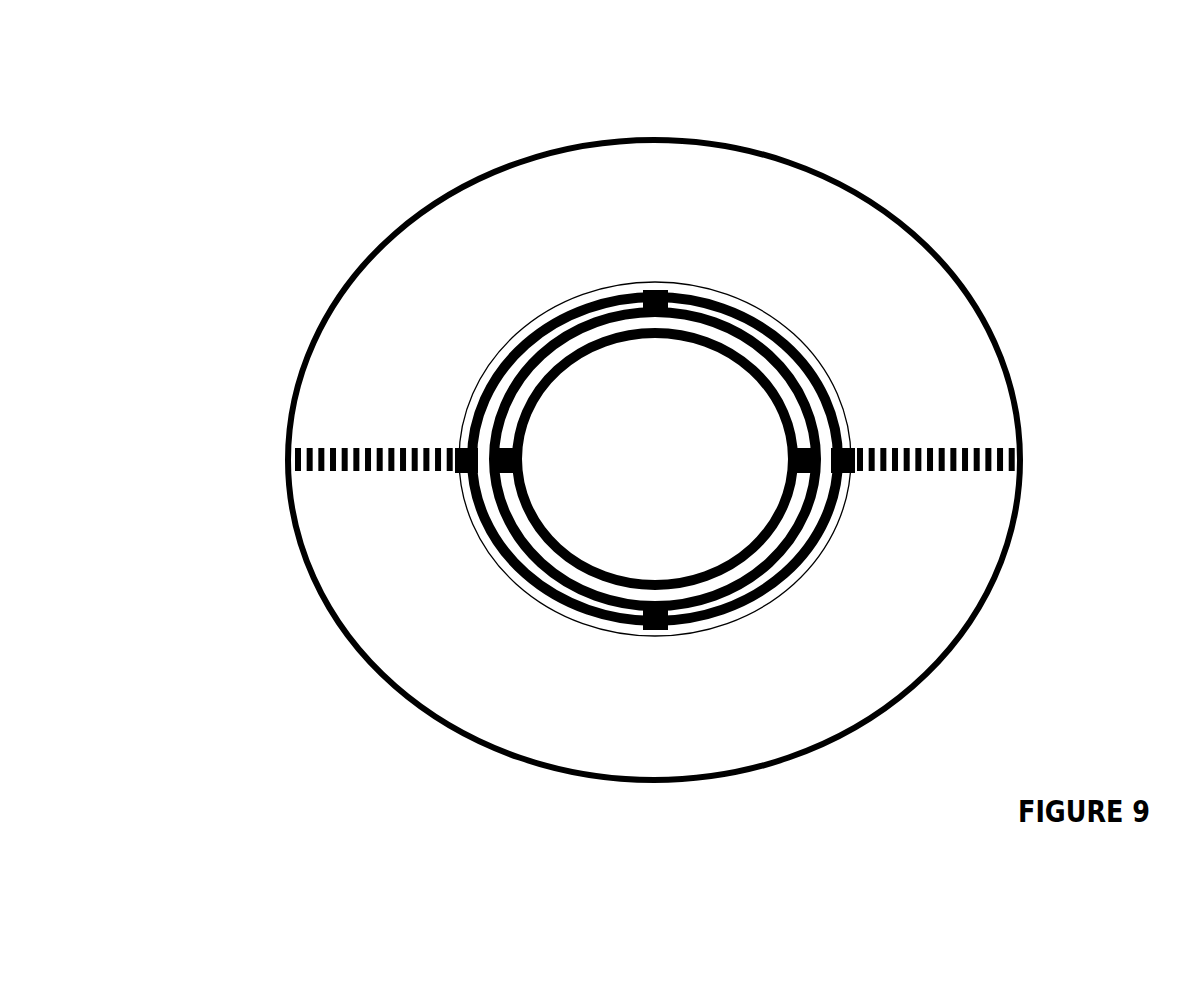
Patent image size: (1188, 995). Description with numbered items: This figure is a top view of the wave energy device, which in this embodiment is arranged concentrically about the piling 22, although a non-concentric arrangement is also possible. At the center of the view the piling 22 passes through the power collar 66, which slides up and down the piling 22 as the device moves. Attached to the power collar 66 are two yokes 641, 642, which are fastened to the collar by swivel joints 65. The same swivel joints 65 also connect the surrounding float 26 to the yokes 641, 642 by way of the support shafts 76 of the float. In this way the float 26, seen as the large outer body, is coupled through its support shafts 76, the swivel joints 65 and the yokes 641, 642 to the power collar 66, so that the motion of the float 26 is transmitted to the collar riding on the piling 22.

The float 26 is at (392, 252).
The piling 22 is at (697, 418).
The yoke 641 is at (502, 557).
The yoke 642 is at (525, 560).
The power collar 66 is at (560, 350).
The support shafts 76 is at (317, 448).
The swivel joints 65 is at (516, 463).